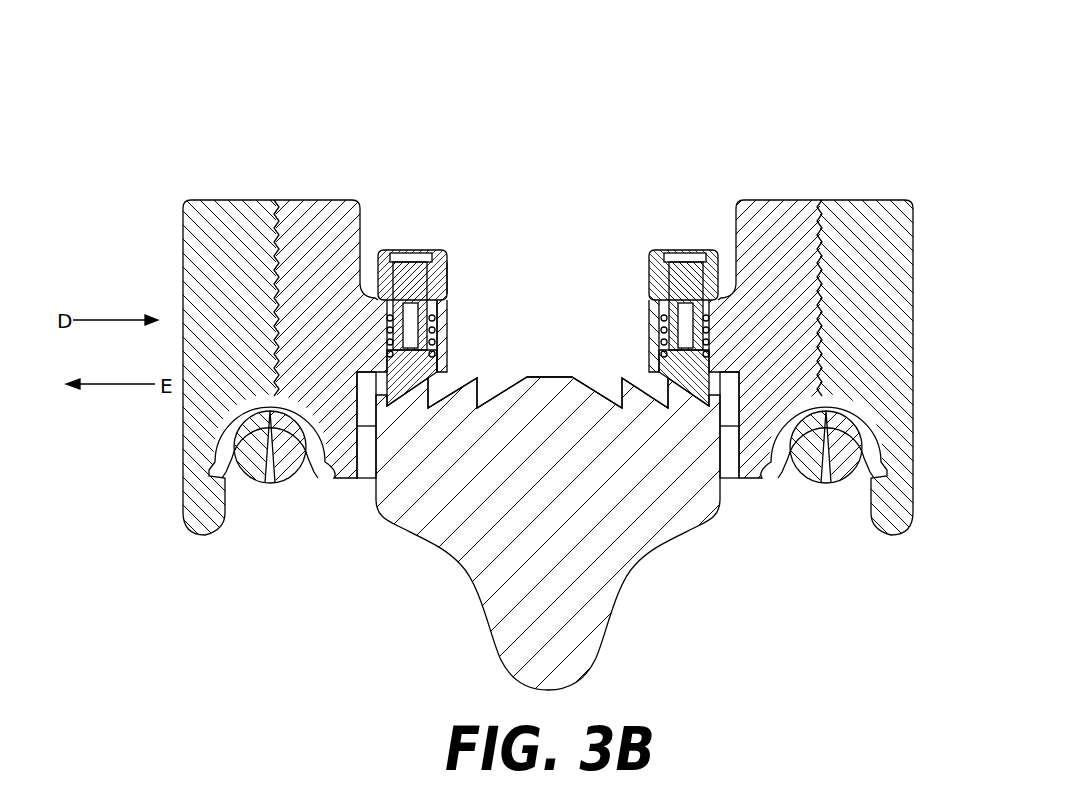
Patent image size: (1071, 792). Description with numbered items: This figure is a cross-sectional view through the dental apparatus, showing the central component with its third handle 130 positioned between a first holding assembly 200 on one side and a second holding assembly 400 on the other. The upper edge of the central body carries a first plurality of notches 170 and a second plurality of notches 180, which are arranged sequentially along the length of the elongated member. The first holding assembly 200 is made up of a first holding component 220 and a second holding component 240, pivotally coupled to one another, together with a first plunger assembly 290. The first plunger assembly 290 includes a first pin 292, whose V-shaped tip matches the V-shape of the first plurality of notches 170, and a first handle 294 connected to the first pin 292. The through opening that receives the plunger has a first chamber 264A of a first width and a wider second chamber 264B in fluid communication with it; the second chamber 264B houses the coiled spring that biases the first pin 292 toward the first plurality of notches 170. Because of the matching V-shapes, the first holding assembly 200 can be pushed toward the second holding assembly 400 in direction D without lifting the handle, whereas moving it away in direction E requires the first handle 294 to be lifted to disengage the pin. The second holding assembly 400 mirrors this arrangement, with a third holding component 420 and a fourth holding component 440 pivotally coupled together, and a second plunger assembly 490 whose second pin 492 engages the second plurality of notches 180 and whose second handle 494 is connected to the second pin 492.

The third handle 130 is at (607, 583).
The first plurality of notches 170 is at (503, 388).
The second plurality of notches 180 is at (590, 385).
The first holding assembly 200 is at (309, 326).
The first holding component 220 is at (183, 240).
The second holding component 240 is at (305, 200).
The first plunger assembly 290 is at (418, 340).
The first pin 292 is at (398, 386).
The first handle 294 is at (437, 250).
The first chamber 264A is at (446, 300).
The second chamber 264B is at (447, 306).
The second holding assembly 400 is at (792, 333).
The third holding component 420 is at (880, 200).
The fourth holding component 440 is at (760, 200).
The second plunger assembly 490 is at (705, 355).
The second pin 492 is at (695, 386).
The second handle 494 is at (722, 295).